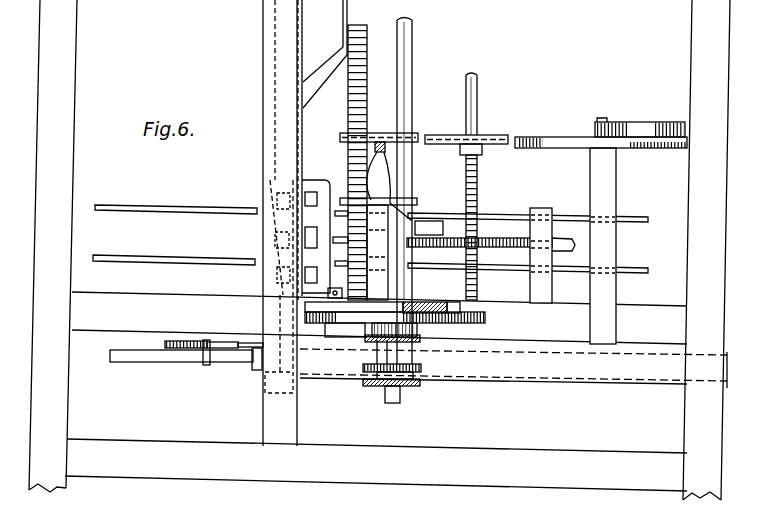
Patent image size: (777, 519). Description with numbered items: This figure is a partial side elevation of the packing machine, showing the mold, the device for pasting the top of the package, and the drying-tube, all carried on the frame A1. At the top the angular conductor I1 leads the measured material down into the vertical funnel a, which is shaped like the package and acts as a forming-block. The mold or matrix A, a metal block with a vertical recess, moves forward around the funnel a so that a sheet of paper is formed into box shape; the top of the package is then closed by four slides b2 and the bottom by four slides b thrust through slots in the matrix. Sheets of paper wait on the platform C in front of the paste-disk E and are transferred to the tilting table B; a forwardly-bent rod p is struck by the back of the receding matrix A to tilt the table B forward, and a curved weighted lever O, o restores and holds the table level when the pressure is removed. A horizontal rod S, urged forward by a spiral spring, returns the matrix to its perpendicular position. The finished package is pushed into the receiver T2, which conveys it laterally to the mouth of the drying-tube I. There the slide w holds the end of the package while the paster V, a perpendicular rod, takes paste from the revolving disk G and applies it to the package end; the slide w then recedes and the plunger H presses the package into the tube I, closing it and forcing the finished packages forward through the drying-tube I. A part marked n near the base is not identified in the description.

The frame A1 is at (370, 250).
The receiver T2 is at (280, 223).
The vertical funnel a is at (292, 148).
The conductor I1 is at (325, 54).
The mold or matrix A is at (316, 228).
The curved weighted lever o is at (329, 293).
The paster V is at (348, 103).
The tilting plate or table B is at (379, 133).
The forwardly-bent rod p is at (389, 186).
The platform C is at (466, 186).
The top slides b2 is at (371, 202).
The bottom slides b is at (370, 255).
The horizontal rod S is at (491, 235).
The curved weighted lever O is at (429, 228).
The paste-disk E is at (601, 133).
The revolving disk G is at (382, 307).
The box n is at (345, 330).
The drying-tube I is at (513, 351).
The plunger H is at (168, 357).
The slide w is at (222, 342).